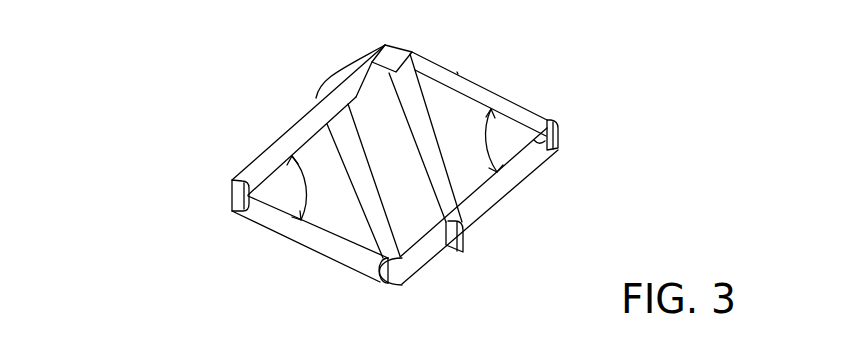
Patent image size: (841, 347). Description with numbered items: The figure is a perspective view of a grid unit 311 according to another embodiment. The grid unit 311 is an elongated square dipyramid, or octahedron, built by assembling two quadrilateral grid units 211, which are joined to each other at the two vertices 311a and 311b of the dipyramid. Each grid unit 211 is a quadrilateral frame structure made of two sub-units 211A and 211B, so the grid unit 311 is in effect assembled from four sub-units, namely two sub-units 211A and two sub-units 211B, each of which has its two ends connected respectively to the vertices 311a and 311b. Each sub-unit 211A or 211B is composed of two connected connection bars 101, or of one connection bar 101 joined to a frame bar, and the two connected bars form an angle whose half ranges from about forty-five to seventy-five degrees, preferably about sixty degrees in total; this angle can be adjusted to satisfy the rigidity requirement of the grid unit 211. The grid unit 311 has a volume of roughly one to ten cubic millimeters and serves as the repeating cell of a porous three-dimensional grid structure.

The grid unit 311 is at (66, 36).
The vertex 311a is at (396, 52).
The vertex 311b is at (388, 281).
The grid unit 211 is at (455, 73).
The sub-unit 211A is at (205, 146).
The sub-unit 211B is at (580, 91).
The connection bar 101 is at (262, 166).